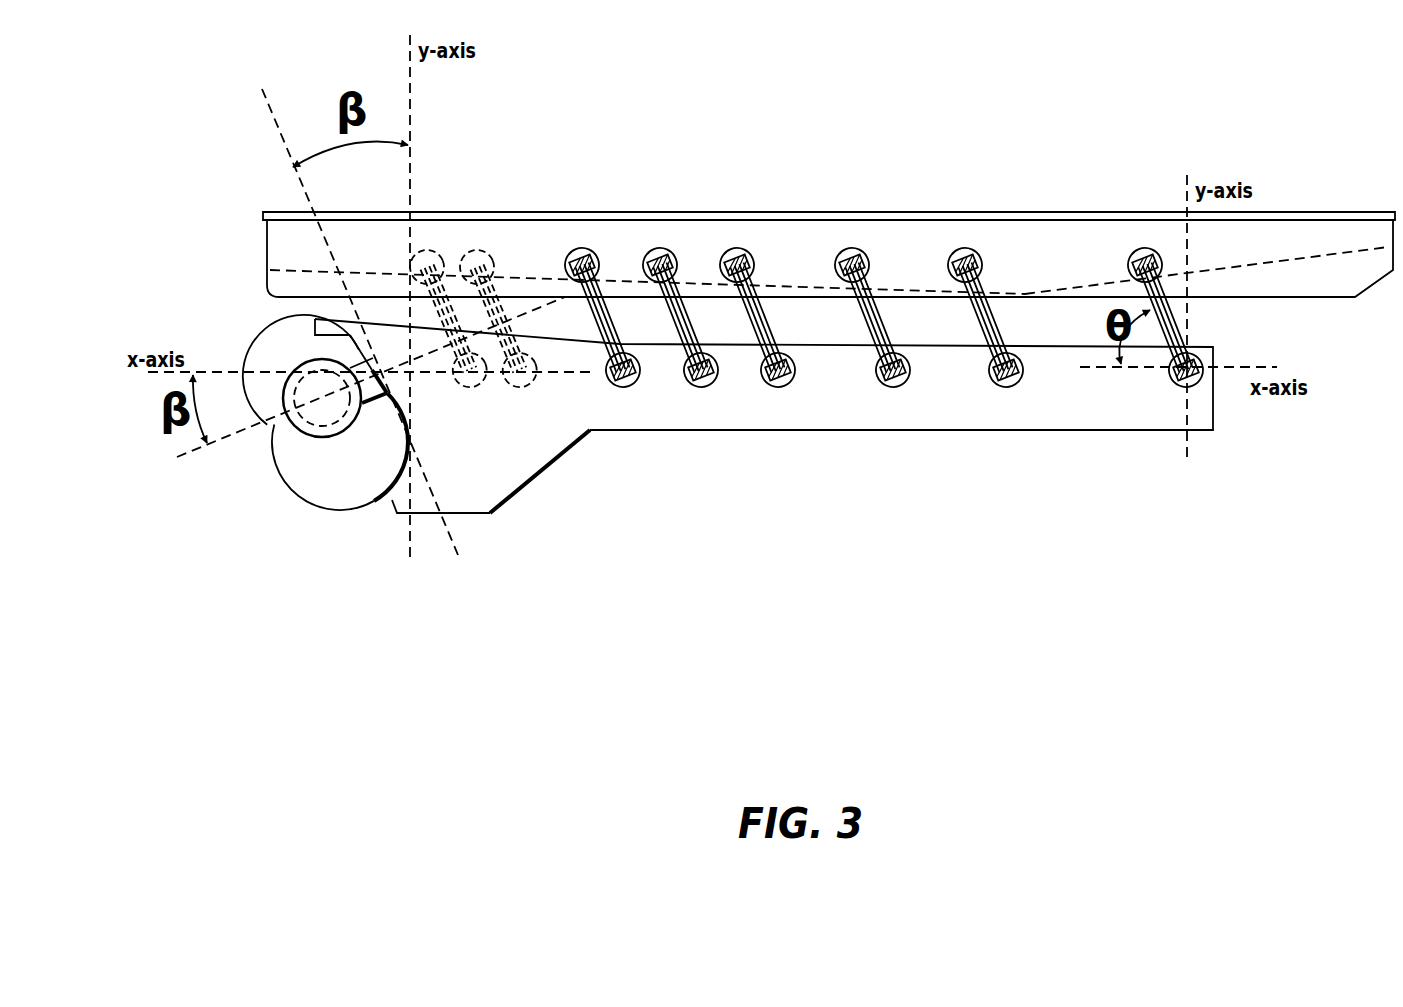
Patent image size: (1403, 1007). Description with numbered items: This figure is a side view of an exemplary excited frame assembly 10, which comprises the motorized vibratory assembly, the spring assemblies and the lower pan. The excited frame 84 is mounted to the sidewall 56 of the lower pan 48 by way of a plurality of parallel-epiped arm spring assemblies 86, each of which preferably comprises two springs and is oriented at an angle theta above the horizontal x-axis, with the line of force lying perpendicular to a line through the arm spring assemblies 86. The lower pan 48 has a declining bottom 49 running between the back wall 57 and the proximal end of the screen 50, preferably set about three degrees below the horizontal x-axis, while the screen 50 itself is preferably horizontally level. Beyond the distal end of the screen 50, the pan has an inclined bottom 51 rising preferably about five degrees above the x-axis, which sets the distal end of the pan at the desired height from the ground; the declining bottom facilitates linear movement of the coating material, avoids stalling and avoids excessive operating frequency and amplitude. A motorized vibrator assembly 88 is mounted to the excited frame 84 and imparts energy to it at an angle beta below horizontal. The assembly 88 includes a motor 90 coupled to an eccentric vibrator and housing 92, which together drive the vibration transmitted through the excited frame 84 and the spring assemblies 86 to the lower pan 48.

The excited frame assembly 10 is at (905, 487).
The lower pan 48 is at (232, 200).
The declining bottom 49 is at (797, 285).
The screen 50 is at (1020, 293).
The inclined bottom 51 is at (1298, 256).
The sidewall 56 is at (565, 235).
The back wall 57 is at (265, 228).
The excited frame 84 is at (535, 462).
The parallel-epiped arm spring assembly 86 is at (440, 252).
The motorized vibrator assembly 88 is at (283, 488).
The motor 90 is at (300, 427).
The eccentric vibrator and housing 92 is at (346, 502).